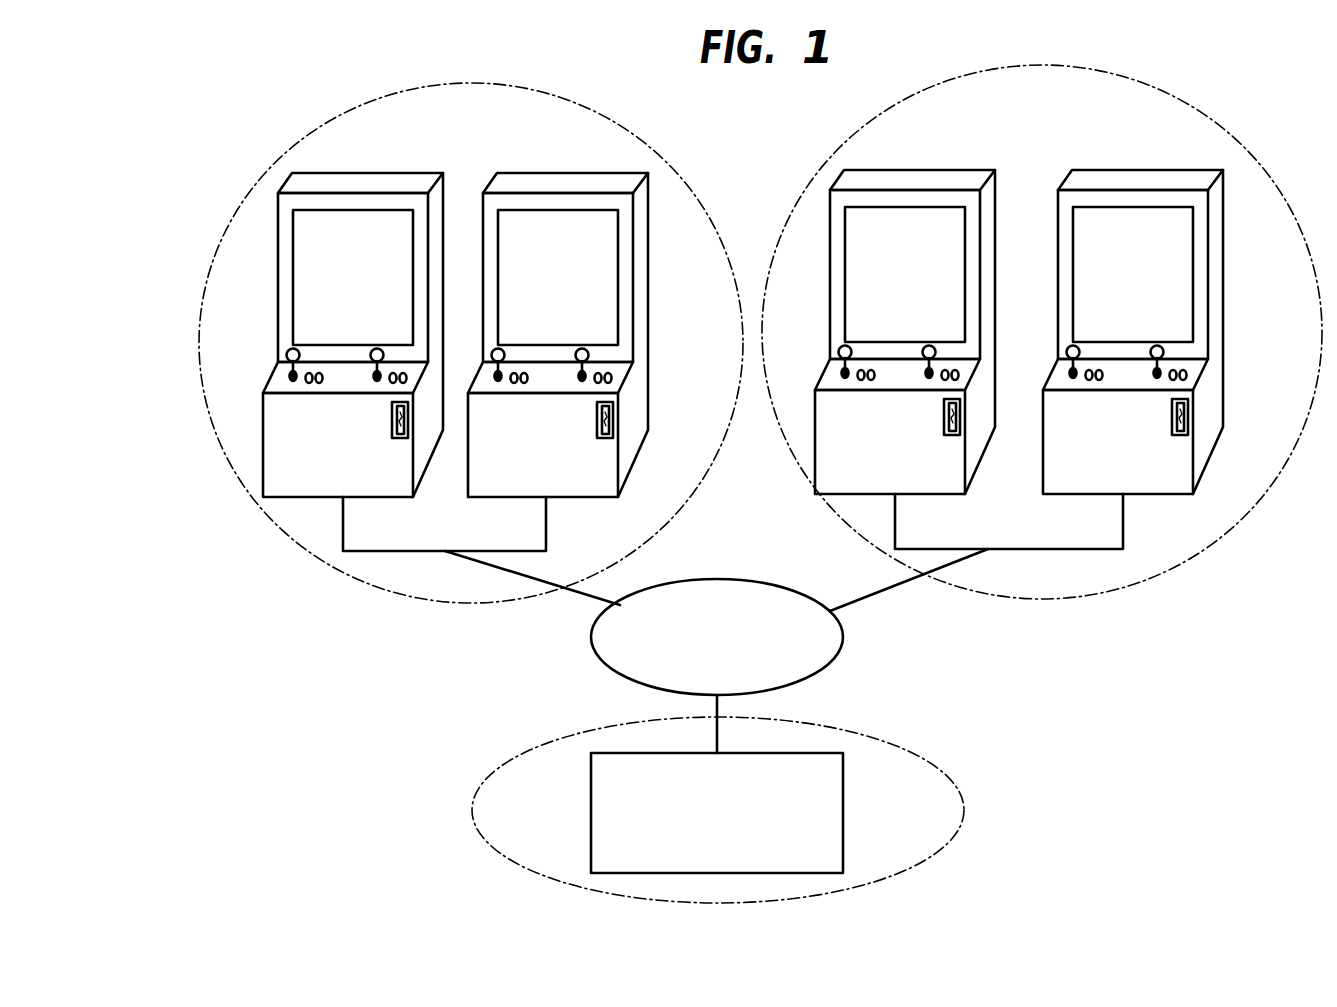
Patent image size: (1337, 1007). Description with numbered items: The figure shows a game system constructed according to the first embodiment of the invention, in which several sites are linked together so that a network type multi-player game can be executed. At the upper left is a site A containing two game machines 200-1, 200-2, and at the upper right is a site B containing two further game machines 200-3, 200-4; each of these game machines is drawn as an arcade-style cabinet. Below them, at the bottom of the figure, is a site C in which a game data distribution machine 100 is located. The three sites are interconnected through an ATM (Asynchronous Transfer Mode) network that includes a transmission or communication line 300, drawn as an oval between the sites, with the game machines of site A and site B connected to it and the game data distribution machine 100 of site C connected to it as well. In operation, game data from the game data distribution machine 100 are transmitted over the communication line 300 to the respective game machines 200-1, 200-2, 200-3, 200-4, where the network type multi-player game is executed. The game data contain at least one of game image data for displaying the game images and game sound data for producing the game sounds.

The game data distribution machine 100 is at (786, 736).
The game machine 200-1 is at (390, 160).
The game machine 200-2 is at (566, 324).
The game machine 200-3 is at (913, 321).
The game machine 200-4 is at (1141, 321).
The transmission or communication line 300 is at (786, 564).
The site A is at (604, 112).
The site B is at (1218, 110).
The site C is at (923, 742).